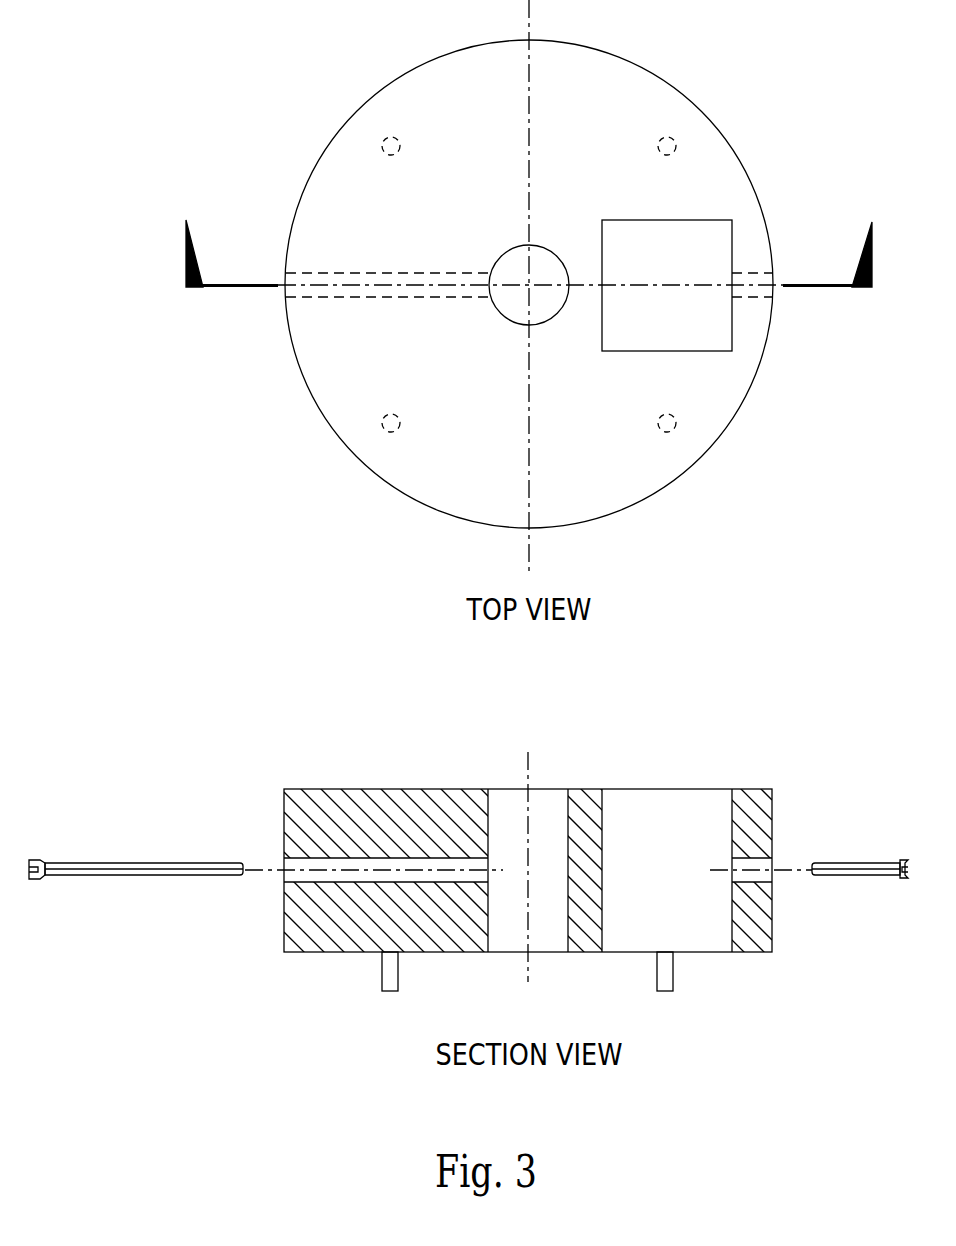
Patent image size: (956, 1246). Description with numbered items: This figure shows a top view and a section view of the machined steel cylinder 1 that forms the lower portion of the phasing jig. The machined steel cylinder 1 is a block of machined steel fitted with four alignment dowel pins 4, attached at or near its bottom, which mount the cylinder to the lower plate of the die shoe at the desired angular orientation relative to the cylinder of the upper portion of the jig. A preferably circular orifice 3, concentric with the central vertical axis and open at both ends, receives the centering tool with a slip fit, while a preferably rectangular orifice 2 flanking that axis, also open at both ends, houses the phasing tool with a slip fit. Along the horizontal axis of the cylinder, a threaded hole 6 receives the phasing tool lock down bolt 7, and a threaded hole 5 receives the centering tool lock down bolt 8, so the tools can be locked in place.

The machined steel cylinder 1 is at (374, 84).
The orifice 2 is at (692, 360).
The orifice 3 is at (546, 228).
The alignment dowel pins 4 is at (684, 975).
The threaded hole 5 is at (305, 873).
The threaded hole 6 is at (759, 874).
The phasing tool lock down bolt 7 is at (852, 888).
The centering tool lock down bolt 8 is at (167, 886).